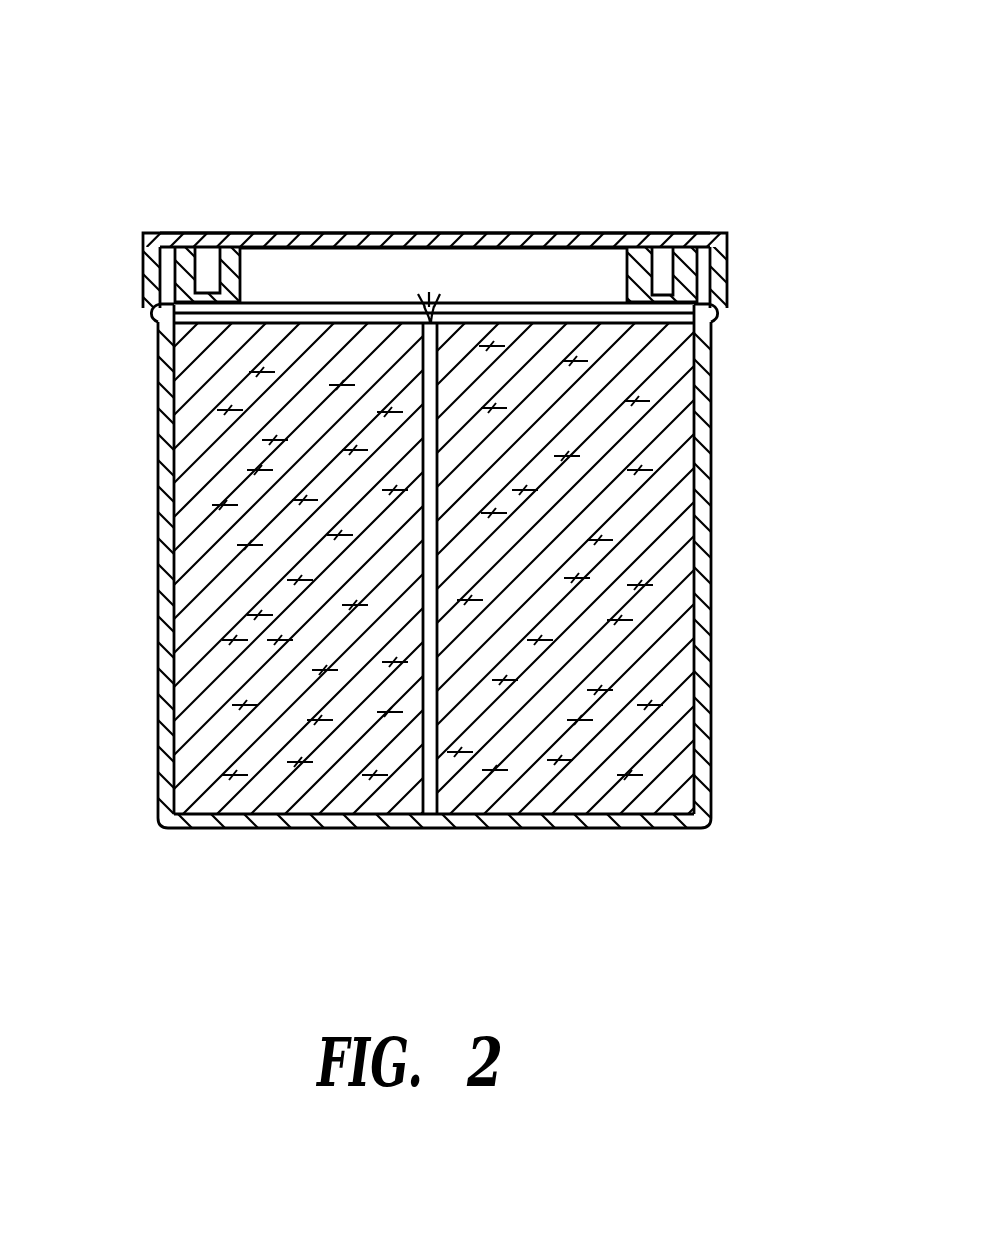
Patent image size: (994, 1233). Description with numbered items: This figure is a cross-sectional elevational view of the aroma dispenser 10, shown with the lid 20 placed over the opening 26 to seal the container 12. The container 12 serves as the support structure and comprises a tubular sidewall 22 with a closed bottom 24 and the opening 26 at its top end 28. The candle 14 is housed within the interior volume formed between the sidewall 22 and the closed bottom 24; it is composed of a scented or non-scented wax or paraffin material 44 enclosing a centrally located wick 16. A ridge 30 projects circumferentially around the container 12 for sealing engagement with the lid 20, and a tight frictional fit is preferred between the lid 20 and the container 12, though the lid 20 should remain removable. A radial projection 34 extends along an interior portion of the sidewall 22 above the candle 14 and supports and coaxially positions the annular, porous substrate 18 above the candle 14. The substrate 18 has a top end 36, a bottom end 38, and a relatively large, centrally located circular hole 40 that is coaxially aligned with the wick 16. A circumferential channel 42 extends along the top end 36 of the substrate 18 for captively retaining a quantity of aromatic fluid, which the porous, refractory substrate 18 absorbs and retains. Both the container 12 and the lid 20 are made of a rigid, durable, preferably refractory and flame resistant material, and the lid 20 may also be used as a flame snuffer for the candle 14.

The aroma dispenser 10 is at (760, 125).
The container 12 is at (728, 439).
The candle 14 is at (245, 318).
The wick 16 is at (425, 762).
The annular, porous substrate 18 is at (263, 240).
The lid 20 is at (748, 277).
The tubular sidewall 22 is at (708, 577).
The closed bottom 24 is at (455, 830).
The opening 26 is at (712, 242).
The top end 28 is at (548, 90).
The ridge 30 is at (157, 316).
The radial projection 34 is at (700, 326).
The top end 36 is at (312, 233).
The bottom end 38 is at (362, 305).
The circular hole 40 is at (483, 268).
The circumferential channel 42 is at (660, 262).
The wax or paraffin material 44 is at (210, 537).